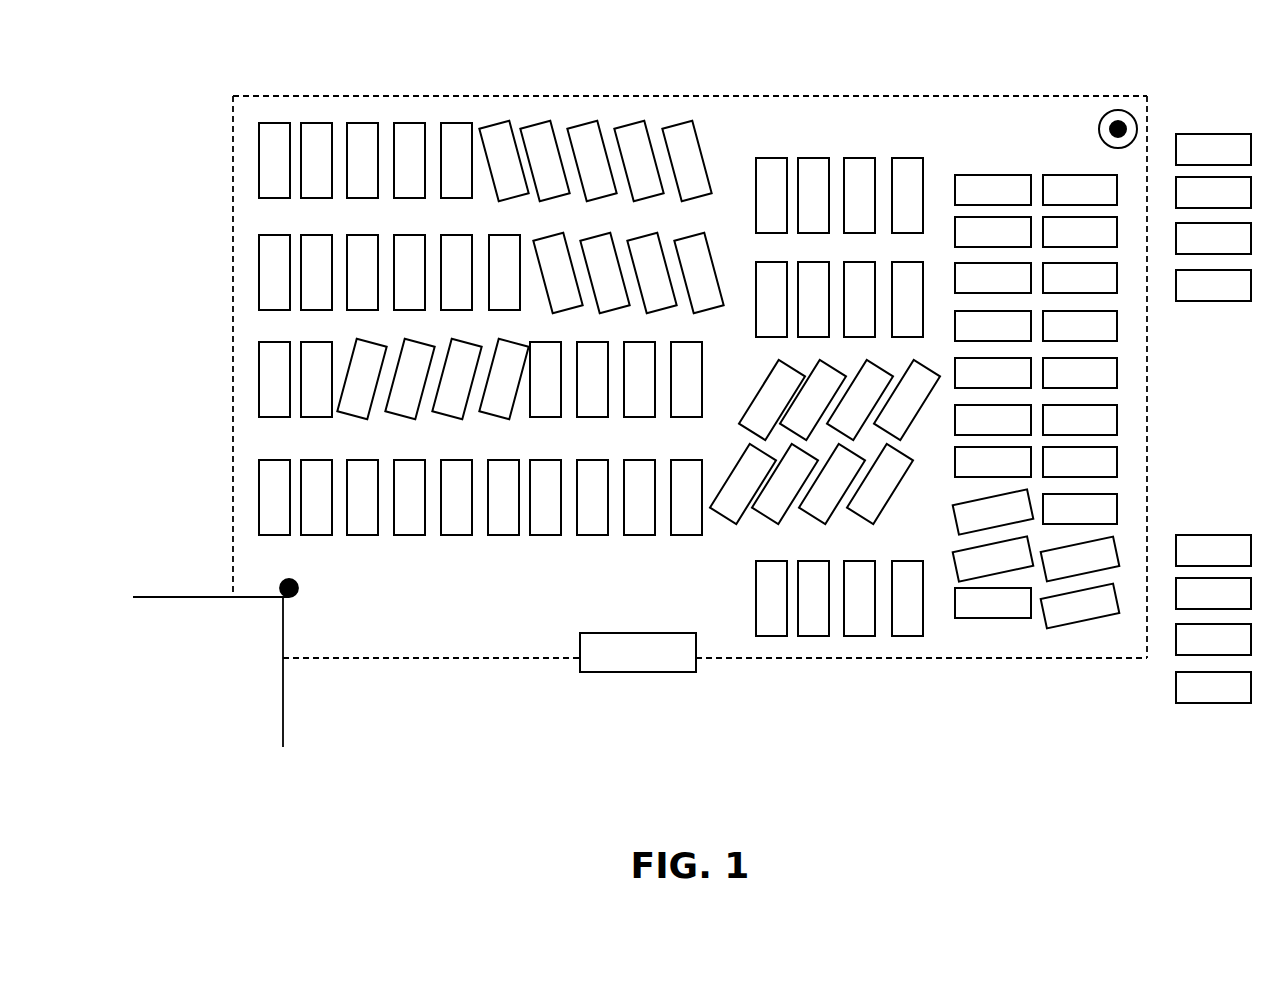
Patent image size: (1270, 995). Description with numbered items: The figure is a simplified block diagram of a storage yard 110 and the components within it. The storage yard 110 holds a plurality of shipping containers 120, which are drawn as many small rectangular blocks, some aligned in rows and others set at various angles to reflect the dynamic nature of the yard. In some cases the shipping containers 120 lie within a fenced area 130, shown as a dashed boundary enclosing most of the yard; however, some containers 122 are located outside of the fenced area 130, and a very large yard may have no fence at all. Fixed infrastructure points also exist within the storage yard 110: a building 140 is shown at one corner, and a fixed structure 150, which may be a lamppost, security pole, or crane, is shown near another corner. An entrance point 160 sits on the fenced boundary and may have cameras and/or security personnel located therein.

The storage yard 110 is at (701, 387).
The shipping containers 120 is at (358, 525).
The containers outside the fenced area 122 is at (1205, 690).
The fenced area 130 is at (332, 95).
The building 140 is at (208, 660).
The fixed structure 150 is at (1104, 115).
The entrance point 160 is at (615, 668).